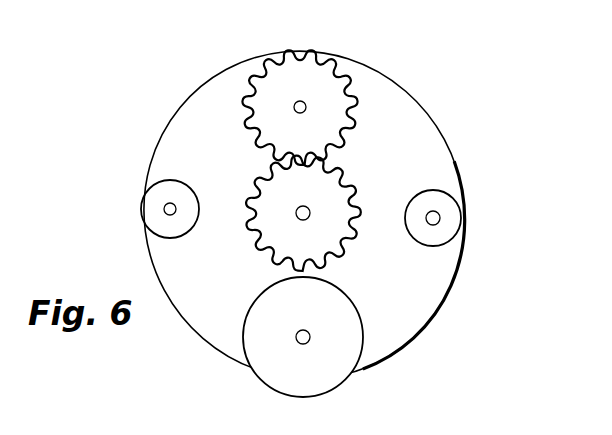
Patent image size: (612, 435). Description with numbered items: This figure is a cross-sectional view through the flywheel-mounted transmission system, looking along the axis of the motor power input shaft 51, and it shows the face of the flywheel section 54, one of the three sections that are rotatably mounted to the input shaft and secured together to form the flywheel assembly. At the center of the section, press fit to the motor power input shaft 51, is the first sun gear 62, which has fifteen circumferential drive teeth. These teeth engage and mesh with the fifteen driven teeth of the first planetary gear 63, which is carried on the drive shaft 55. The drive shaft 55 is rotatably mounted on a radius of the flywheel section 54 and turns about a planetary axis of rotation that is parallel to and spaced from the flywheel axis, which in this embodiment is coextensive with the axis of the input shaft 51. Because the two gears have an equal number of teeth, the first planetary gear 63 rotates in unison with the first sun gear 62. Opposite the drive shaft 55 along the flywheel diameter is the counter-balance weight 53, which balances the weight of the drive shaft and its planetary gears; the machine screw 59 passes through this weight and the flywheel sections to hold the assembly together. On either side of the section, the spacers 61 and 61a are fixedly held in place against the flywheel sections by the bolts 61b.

The motor power input shaft 51 is at (298, 208).
The counter-balance weight 53 is at (337, 360).
The flywheel section 54 is at (425, 147).
The drive shaft 55 is at (295, 103).
The machine screw 59 is at (296, 340).
The spacer 61 is at (155, 217).
The spacer 61a is at (455, 213).
The bolt 61b is at (166, 205).
The first sun gear 62 is at (333, 202).
The first planetary gear 63 is at (333, 90).